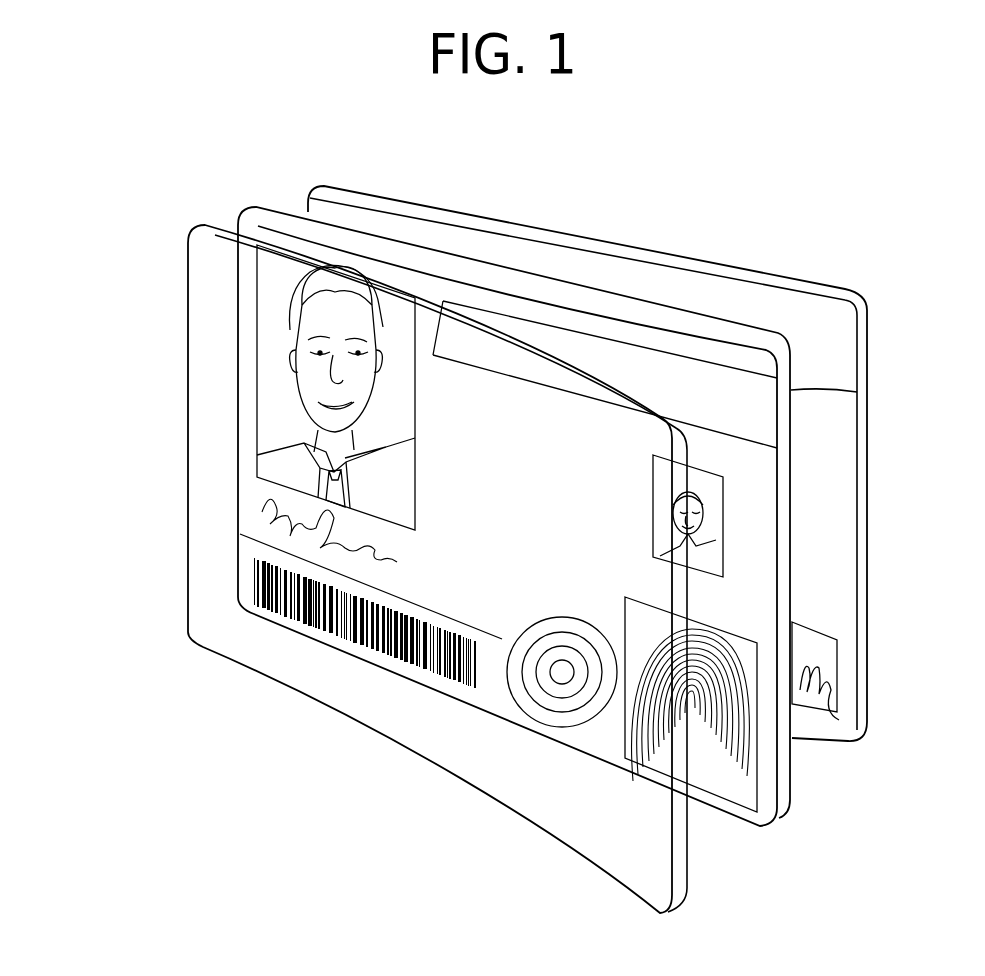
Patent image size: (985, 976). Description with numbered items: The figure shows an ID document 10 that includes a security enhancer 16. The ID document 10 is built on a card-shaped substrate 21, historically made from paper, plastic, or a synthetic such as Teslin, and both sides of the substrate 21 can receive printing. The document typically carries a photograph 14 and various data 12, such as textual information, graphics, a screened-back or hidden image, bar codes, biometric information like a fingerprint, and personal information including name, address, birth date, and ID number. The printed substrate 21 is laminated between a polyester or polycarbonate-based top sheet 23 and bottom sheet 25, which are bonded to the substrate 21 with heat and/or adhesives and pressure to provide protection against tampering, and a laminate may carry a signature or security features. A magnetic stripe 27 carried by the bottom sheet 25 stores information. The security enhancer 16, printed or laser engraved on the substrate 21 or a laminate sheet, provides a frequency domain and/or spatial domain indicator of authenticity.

The ID document 10 is at (308, 740).
The data 12 is at (713, 605).
The photograph 14 is at (259, 396).
The security enhancer 16 is at (551, 706).
The substrate 21 is at (802, 549).
The top sheet 23 is at (688, 874).
The bottom sheet 25 is at (881, 309).
The magnetic stripe 27 is at (847, 364).